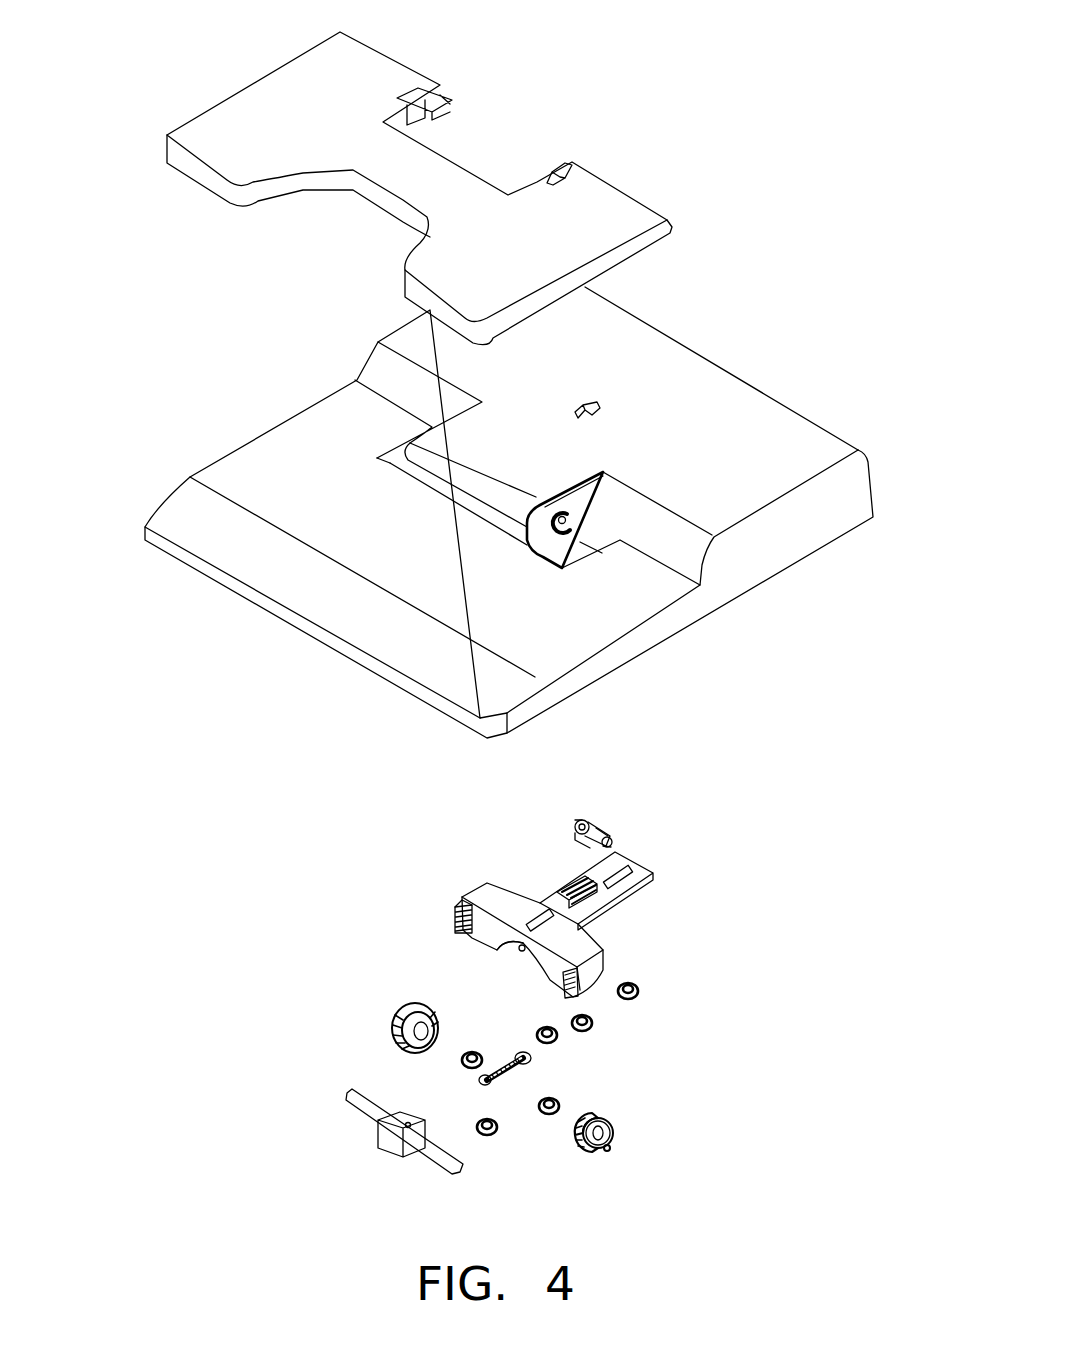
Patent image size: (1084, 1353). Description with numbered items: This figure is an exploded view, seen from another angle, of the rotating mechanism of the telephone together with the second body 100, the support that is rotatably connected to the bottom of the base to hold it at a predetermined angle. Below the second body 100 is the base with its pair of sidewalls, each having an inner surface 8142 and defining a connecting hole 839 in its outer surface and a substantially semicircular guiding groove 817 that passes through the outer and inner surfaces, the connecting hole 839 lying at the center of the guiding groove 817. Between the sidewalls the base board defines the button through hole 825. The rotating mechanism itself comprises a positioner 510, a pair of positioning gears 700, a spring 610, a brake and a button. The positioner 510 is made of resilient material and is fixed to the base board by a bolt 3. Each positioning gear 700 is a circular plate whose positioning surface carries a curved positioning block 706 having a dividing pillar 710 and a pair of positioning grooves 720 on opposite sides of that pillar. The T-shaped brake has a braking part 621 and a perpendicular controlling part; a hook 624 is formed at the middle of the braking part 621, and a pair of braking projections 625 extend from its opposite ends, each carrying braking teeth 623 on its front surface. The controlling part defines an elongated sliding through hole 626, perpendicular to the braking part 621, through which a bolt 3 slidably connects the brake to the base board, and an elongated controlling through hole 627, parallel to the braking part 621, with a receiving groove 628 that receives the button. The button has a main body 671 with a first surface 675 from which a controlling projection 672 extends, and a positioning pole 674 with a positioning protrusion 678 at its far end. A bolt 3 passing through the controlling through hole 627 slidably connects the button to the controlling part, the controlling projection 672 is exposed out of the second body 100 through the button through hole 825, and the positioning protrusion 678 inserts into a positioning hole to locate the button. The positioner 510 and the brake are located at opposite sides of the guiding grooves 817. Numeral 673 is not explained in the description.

The second body 100 is at (603, 202).
The inner surface 8142 is at (568, 535).
The button through hole 825 is at (605, 472).
The connecting hole 839 is at (572, 522).
The guiding groove 817 is at (540, 537).
The braking part 621 is at (580, 948).
The braking teeth 623 is at (455, 925).
The braking projections 625 is at (460, 905).
The hook 624 is at (518, 950).
The sliding through hole 626 is at (540, 910).
The controlling through hole 627 is at (607, 902).
The receiving groove 628 is at (573, 882).
The main body 671 is at (603, 823).
The controlling projection 672 is at (585, 817).
The first surface 675 is at (573, 818).
The positioning pole 674 is at (603, 832).
The positioning protrusion 678 is at (610, 838).
The lever tip 673 is at (607, 848).
The bolt 3 is at (635, 985).
The spring 610 is at (530, 1058).
The positioning gears 700 is at (610, 1115).
The dividing pillar 710 is at (610, 1152).
The positioning grooves 720 is at (593, 1152).
The positioning block 706 is at (685, 1145).
The positioner 510 is at (402, 1153).